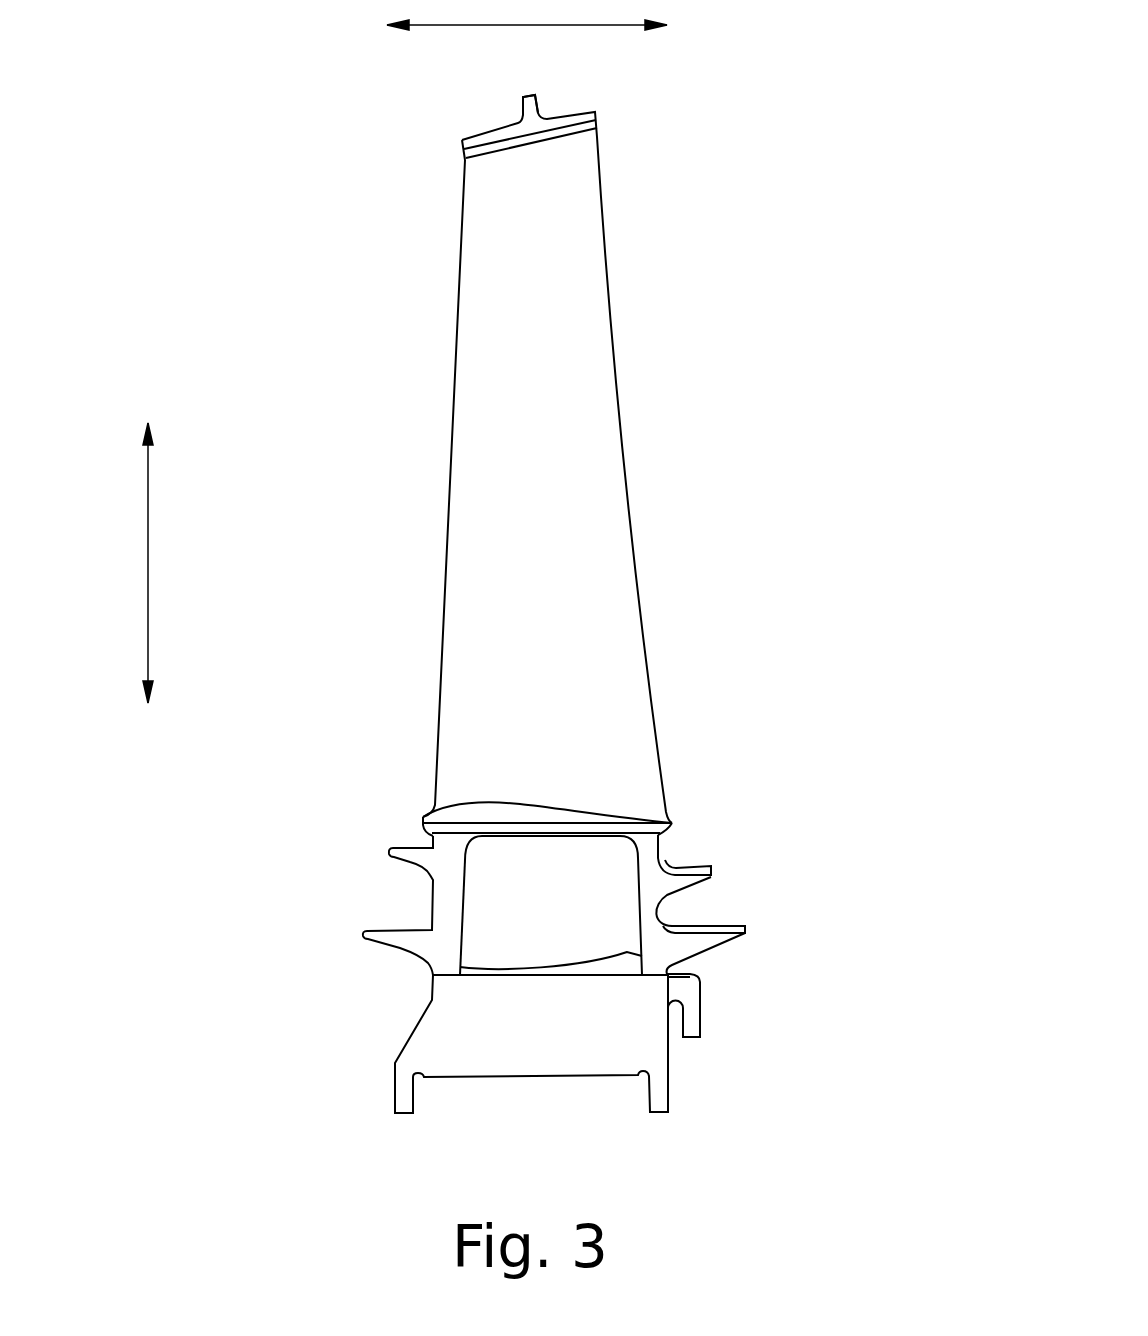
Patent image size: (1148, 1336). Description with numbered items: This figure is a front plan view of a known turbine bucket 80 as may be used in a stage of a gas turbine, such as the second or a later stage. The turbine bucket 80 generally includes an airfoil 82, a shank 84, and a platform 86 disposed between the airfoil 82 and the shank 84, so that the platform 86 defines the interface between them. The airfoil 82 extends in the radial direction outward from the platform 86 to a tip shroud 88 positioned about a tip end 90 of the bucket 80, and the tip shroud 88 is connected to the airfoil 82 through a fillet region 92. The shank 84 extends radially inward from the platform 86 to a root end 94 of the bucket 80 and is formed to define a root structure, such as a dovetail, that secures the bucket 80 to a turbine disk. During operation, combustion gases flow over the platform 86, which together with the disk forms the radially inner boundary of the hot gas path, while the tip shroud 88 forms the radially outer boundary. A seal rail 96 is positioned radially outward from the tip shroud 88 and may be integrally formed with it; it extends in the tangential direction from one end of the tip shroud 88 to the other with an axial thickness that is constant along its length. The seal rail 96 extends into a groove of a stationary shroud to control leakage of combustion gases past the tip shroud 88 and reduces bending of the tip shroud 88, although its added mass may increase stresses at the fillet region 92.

The turbine bucket 80 is at (245, 50).
The airfoil 82 is at (643, 580).
The shank 84 is at (660, 912).
The platform 86 is at (423, 822).
The tip shroud 88 is at (595, 113).
The tip end 90 is at (483, 100).
The fillet region 92 is at (572, 130).
The root end 94 is at (627, 1138).
The seal rail 96 is at (538, 95).